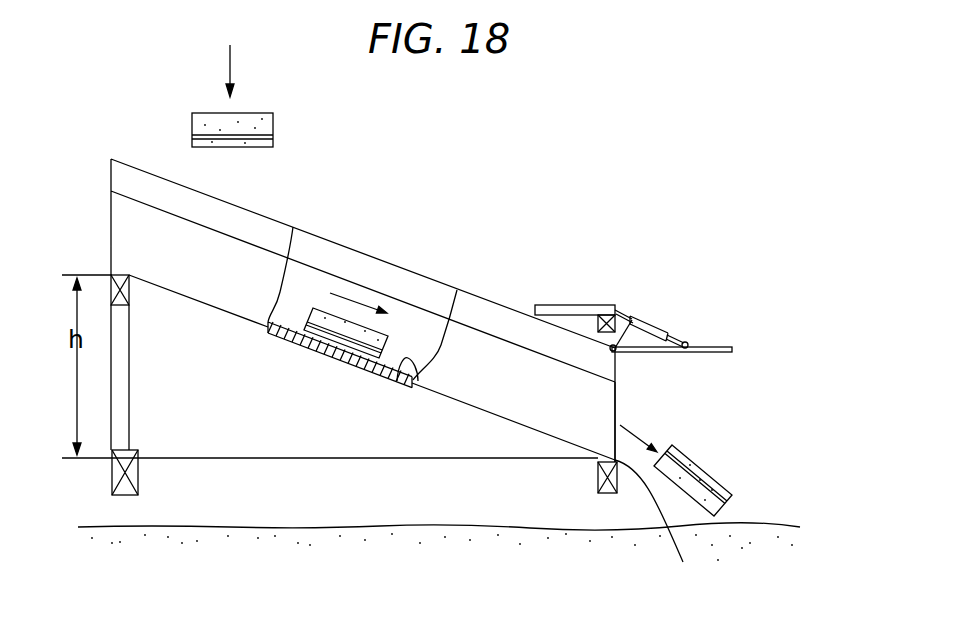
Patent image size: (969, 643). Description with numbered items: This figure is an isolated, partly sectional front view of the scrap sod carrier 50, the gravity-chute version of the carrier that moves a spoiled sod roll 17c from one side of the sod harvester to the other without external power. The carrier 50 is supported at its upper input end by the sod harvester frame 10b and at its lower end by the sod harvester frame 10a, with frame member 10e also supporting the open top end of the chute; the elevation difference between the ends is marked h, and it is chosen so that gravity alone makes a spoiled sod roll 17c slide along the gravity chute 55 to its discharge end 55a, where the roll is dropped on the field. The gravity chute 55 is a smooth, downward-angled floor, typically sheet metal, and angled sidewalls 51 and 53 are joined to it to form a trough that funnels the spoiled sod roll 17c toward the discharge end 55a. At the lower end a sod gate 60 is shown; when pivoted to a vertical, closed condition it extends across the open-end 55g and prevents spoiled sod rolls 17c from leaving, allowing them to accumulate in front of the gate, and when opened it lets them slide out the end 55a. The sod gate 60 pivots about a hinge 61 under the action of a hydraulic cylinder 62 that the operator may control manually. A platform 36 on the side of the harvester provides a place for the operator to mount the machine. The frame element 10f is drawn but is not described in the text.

The scrap sod carrier 50 is at (108, 168).
The angled sidewall 51 is at (357, 265).
The angled sidewall 53 is at (262, 226).
The gravity chute 55 is at (415, 366).
The discharge end 55a is at (663, 526).
The open-end 55g is at (630, 397).
The spoiled sod roll 17c is at (212, 118).
The sod harvester frame 10a is at (597, 477).
The sod harvester frame 10b is at (112, 473).
The sod harvester frame member 10e is at (108, 279).
The mounting bracket 10f is at (600, 318).
The platform 36 is at (560, 308).
The sod gate 60 is at (713, 348).
The hinge 61 is at (660, 318).
The hydraulic cylinder 62 is at (660, 330).